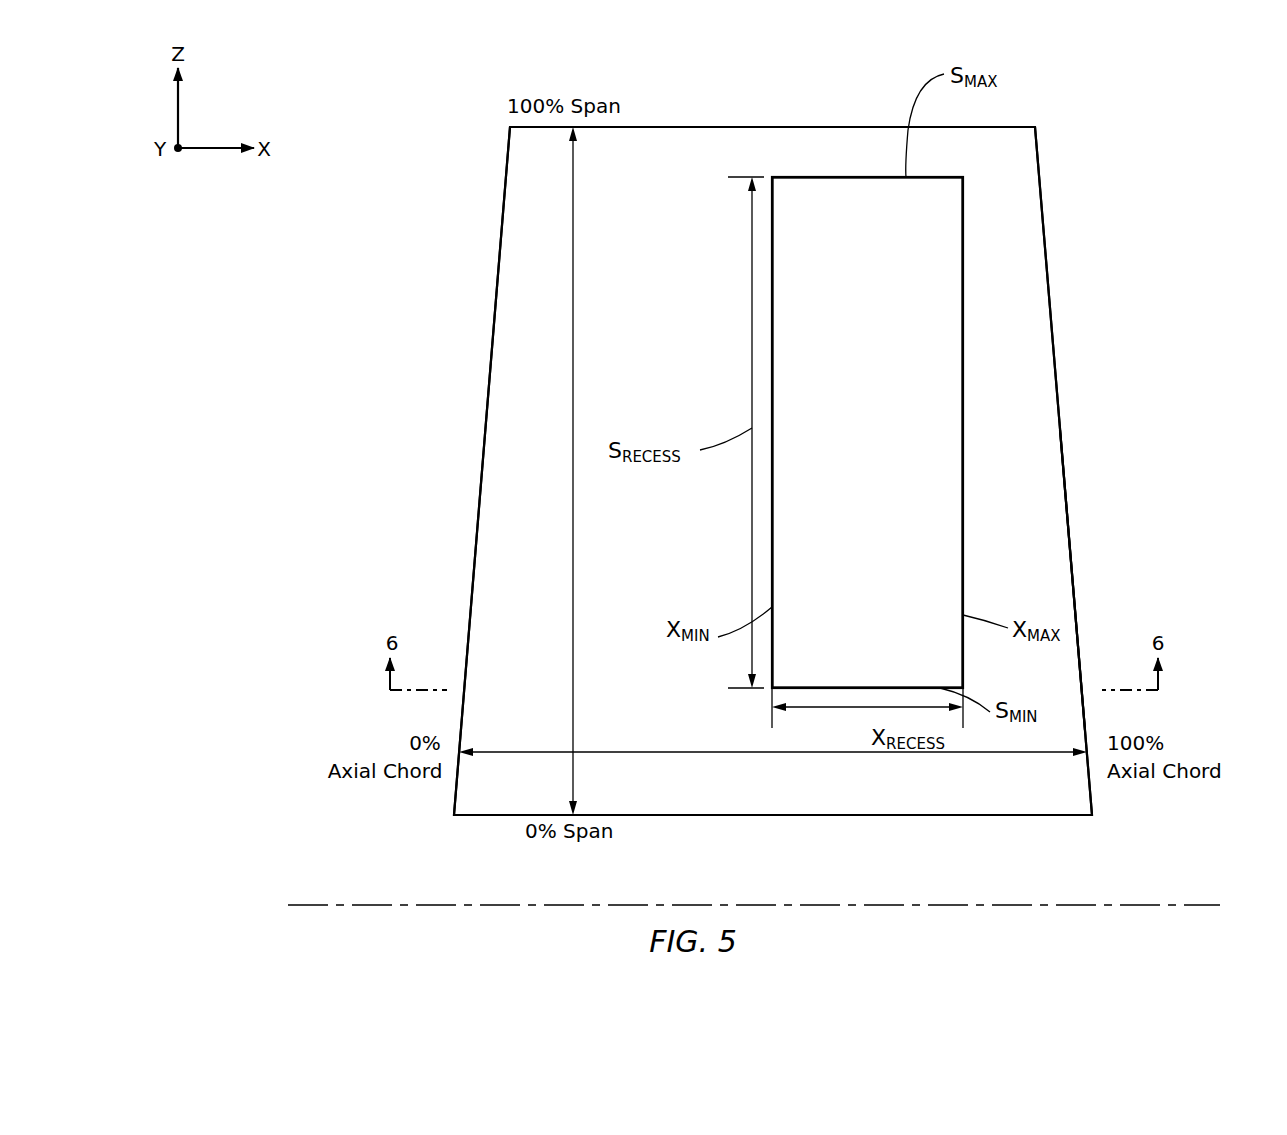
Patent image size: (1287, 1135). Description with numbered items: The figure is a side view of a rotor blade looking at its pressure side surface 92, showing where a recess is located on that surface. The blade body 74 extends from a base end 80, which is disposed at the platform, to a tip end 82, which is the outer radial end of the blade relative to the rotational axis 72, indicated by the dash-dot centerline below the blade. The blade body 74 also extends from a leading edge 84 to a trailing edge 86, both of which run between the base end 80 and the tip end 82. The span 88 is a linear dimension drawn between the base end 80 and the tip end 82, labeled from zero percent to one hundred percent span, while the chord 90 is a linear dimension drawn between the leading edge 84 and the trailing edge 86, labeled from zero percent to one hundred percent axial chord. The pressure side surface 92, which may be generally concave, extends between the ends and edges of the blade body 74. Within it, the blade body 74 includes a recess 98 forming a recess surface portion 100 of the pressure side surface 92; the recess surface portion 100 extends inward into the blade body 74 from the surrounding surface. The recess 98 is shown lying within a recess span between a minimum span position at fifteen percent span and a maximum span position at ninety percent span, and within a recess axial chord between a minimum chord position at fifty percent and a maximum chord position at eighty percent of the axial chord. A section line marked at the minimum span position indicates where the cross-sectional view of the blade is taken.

The rotational axis 72 is at (1150, 905).
The blade body 74 is at (1122, 158).
The base end 80 is at (1012, 816).
The tip end 82 is at (821, 126).
The leading edge 84 is at (488, 395).
The trailing edge 86 is at (1056, 347).
The span 88 is at (574, 251).
The chord 90 is at (672, 752).
The pressure side surface 92 is at (1055, 548).
The recess 98 is at (915, 430).
The recess surface portion 100 is at (880, 471).